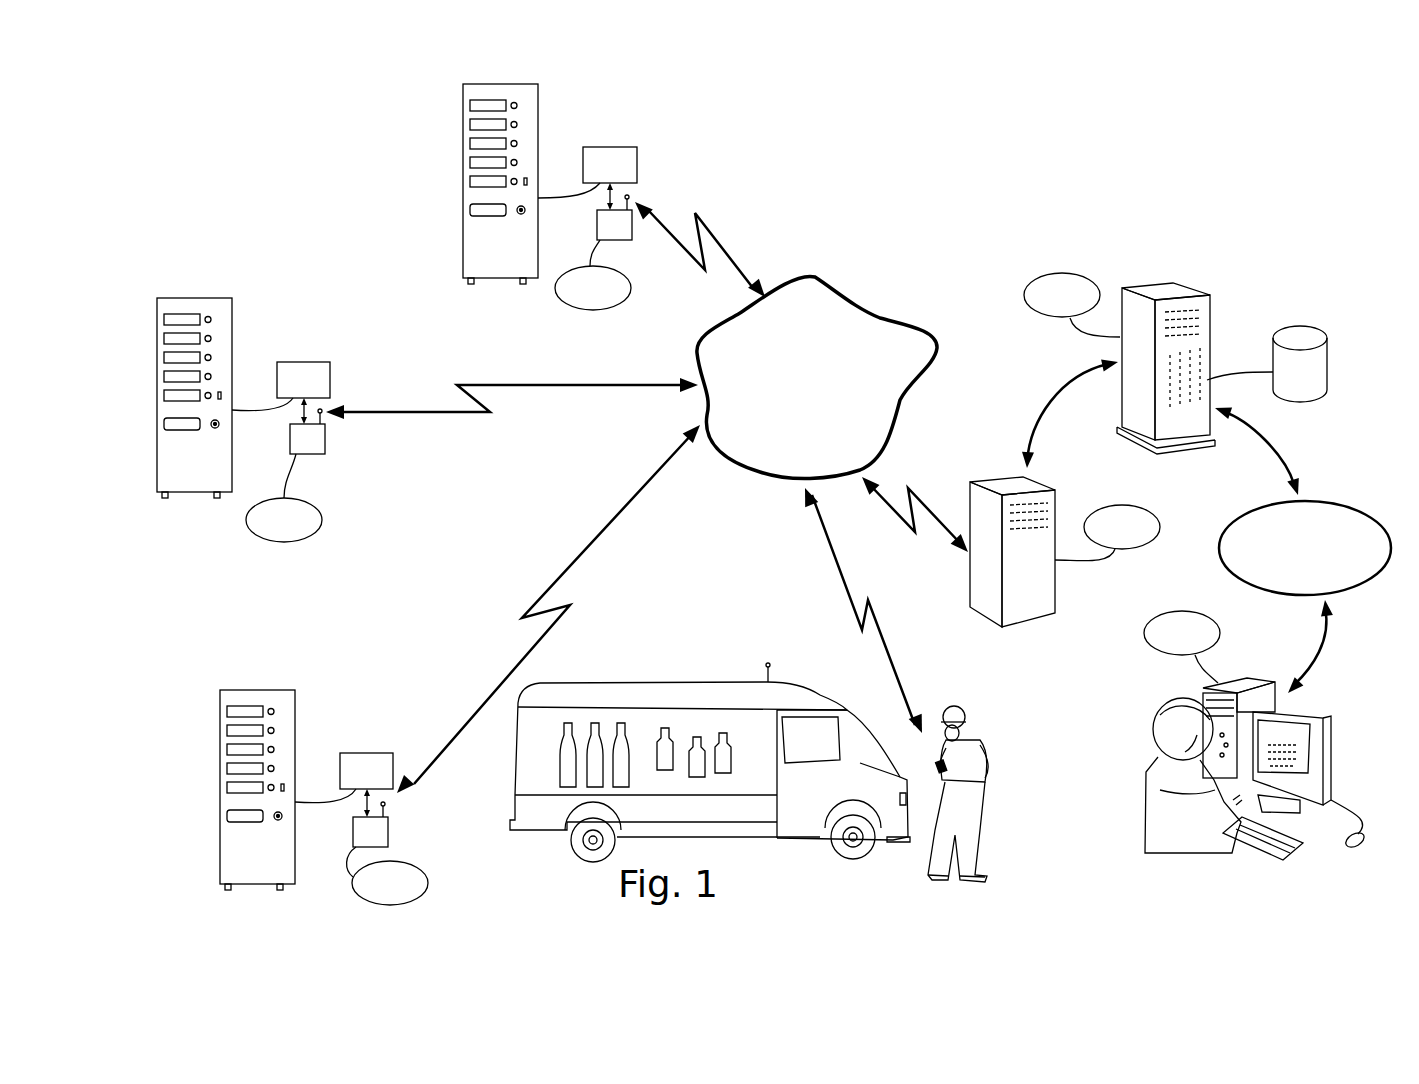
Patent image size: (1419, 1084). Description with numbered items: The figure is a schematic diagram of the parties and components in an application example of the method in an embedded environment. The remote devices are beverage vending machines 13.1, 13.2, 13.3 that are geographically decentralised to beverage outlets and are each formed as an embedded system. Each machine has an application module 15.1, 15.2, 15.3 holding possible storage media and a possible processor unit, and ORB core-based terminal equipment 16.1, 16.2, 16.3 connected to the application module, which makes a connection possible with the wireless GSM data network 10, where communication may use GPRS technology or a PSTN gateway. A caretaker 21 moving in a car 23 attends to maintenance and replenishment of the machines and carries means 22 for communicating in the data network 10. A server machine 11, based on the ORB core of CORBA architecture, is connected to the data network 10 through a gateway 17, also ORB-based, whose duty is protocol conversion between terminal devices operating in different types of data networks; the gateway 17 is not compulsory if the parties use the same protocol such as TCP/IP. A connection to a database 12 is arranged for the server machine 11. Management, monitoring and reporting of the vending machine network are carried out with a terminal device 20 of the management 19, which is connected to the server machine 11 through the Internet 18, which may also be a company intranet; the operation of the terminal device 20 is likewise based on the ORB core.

The data network 10 is at (818, 297).
The server machine 11 is at (1156, 290).
The database 12 is at (1298, 338).
The beverage vending machine 13.1 is at (205, 720).
The beverage vending machine 13.2 is at (197, 268).
The beverage vending machine 13.3 is at (565, 101).
The application module 15.1 is at (345, 753).
The application module 15.2 is at (317, 367).
The application module 15.3 is at (637, 175).
The terminal equipment 16.1 is at (386, 833).
The terminal equipment 16.2 is at (303, 452).
The terminal equipment 16.3 is at (622, 232).
The gateway 17 is at (993, 593).
The Internet 18 is at (1348, 512).
The management 19 is at (1325, 695).
The terminal device of the management 20 is at (1248, 683).
The caretaker 21 is at (1005, 778).
The means for communicating 22 is at (918, 761).
The car 23 is at (630, 690).